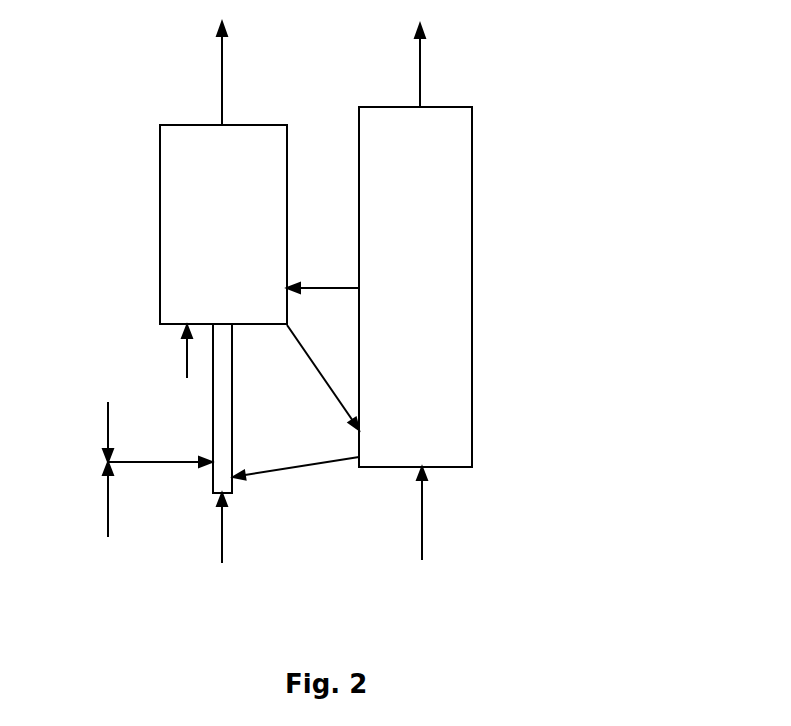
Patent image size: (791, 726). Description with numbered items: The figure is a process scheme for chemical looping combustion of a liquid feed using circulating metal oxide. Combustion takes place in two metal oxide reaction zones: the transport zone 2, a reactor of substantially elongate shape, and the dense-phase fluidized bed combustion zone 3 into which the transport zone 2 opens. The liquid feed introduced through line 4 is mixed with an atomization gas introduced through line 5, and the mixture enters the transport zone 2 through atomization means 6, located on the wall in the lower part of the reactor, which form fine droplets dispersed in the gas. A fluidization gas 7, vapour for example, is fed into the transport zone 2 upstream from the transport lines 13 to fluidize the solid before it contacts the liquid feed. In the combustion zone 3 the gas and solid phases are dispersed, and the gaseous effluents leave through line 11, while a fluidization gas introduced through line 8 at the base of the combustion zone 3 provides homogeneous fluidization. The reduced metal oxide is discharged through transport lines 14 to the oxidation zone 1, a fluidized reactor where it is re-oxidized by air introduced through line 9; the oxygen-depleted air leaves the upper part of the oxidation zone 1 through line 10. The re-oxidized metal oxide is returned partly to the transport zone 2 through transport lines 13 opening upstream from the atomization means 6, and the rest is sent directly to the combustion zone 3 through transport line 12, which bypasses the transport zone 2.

The oxidation zone 1 is at (440, 274).
The transport zone 2 is at (218, 393).
The combustion zone 3 is at (231, 228).
The line 4 is at (106, 515).
The line 5 is at (106, 422).
The atomization means 6 is at (158, 467).
The fluidization gas 7 is at (224, 525).
The line 8 is at (163, 353).
The line 9 is at (423, 540).
The line 10 is at (420, 72).
The line 11 is at (222, 72).
The transport line 12 is at (324, 288).
The transport lines 13 is at (308, 462).
The transport lines 14 is at (312, 358).